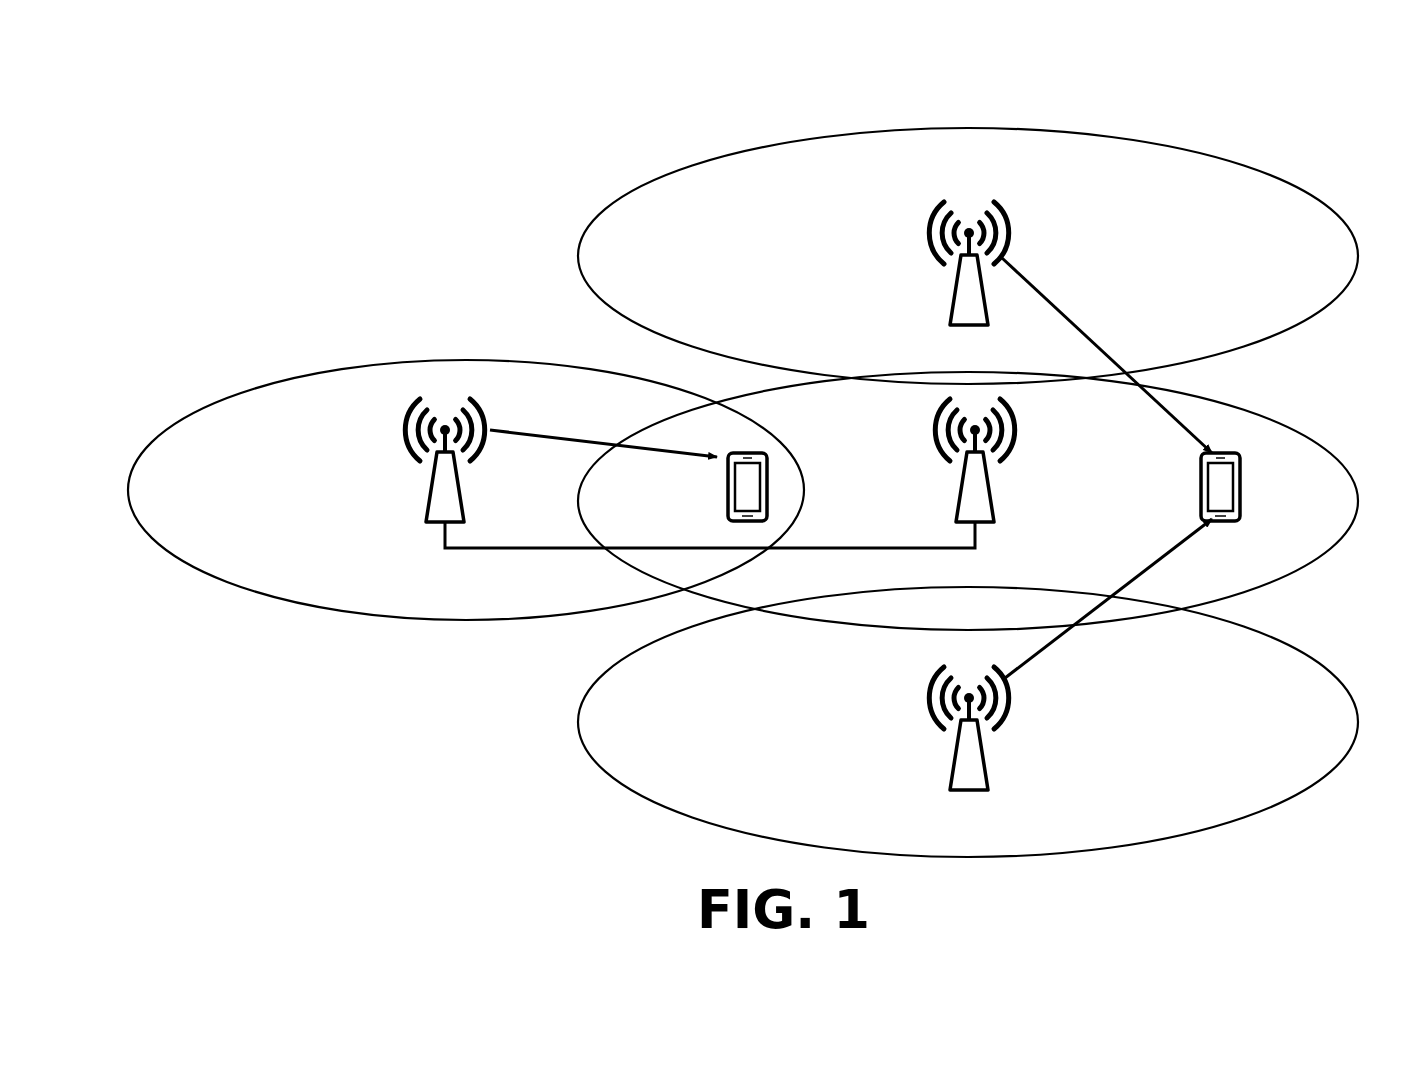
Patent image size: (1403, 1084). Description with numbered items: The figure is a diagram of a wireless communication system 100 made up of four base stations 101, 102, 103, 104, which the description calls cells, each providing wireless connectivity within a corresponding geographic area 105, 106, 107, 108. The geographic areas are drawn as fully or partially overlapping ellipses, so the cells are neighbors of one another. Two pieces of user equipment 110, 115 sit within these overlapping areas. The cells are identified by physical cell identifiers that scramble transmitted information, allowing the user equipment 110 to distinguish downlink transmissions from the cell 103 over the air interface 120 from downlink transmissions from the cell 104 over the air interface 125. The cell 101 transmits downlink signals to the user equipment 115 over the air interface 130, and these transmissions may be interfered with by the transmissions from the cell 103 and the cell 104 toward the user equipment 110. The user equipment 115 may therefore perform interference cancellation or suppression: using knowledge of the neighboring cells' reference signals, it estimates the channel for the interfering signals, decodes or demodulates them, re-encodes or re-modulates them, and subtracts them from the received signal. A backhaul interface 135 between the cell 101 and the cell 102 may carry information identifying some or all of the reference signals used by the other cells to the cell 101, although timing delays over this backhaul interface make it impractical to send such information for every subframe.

The wireless communication system 100 is at (1240, 122).
The base station (cell) 101 is at (430, 503).
The base station (cell) 102 is at (958, 503).
The base station (cell) 103 is at (953, 310).
The base station (cell) 104 is at (952, 775).
The geographic area 105 is at (365, 622).
The geographic area 106 is at (1283, 580).
The geographic area 107 is at (665, 175).
The geographic area 108 is at (653, 803).
The user equipment 110 is at (1241, 485).
The user equipment 115 is at (769, 481).
The air interface 120 is at (1092, 338).
The air interface 125 is at (1130, 582).
The air interface 130 is at (595, 438).
The backhaul interface 135 is at (560, 550).